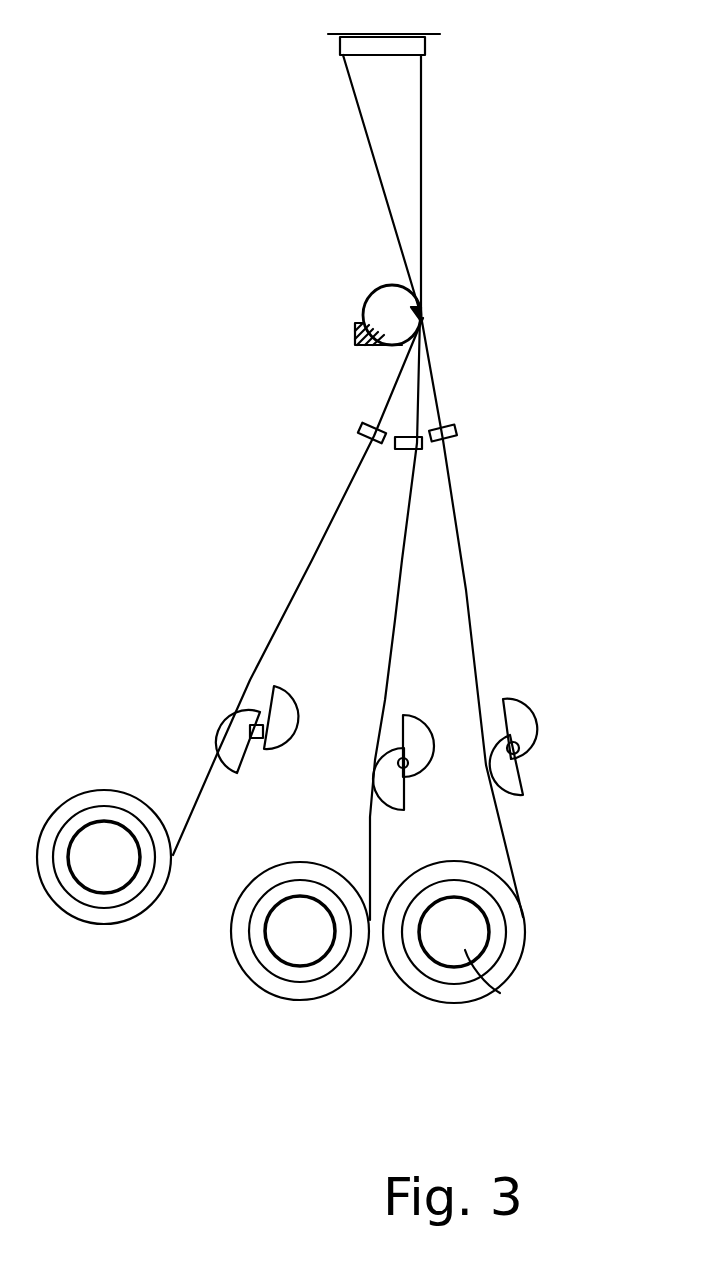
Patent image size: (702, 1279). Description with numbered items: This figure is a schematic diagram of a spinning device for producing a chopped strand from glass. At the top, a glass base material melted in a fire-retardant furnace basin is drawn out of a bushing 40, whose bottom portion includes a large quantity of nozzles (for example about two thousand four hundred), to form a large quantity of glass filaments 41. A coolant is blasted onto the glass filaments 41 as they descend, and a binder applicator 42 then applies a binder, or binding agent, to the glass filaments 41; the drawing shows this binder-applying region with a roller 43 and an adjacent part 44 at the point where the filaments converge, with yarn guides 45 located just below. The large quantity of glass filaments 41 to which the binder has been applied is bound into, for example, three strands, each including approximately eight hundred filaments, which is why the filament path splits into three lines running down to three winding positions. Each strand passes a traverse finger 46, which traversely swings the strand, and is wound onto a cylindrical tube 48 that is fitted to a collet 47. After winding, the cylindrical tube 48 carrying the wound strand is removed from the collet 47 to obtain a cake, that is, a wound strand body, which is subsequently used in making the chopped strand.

The bushing 40 is at (428, 48).
The glass filaments 41 is at (420, 188).
The binder applicator 42 is at (447, 282).
The roller 43 is at (365, 325).
The nip shoe 44 is at (422, 313).
The yarn guides 45 is at (457, 433).
The traverse finger 46 is at (537, 720).
The collet 47 is at (500, 993).
The cylindrical tube 48 is at (493, 952).